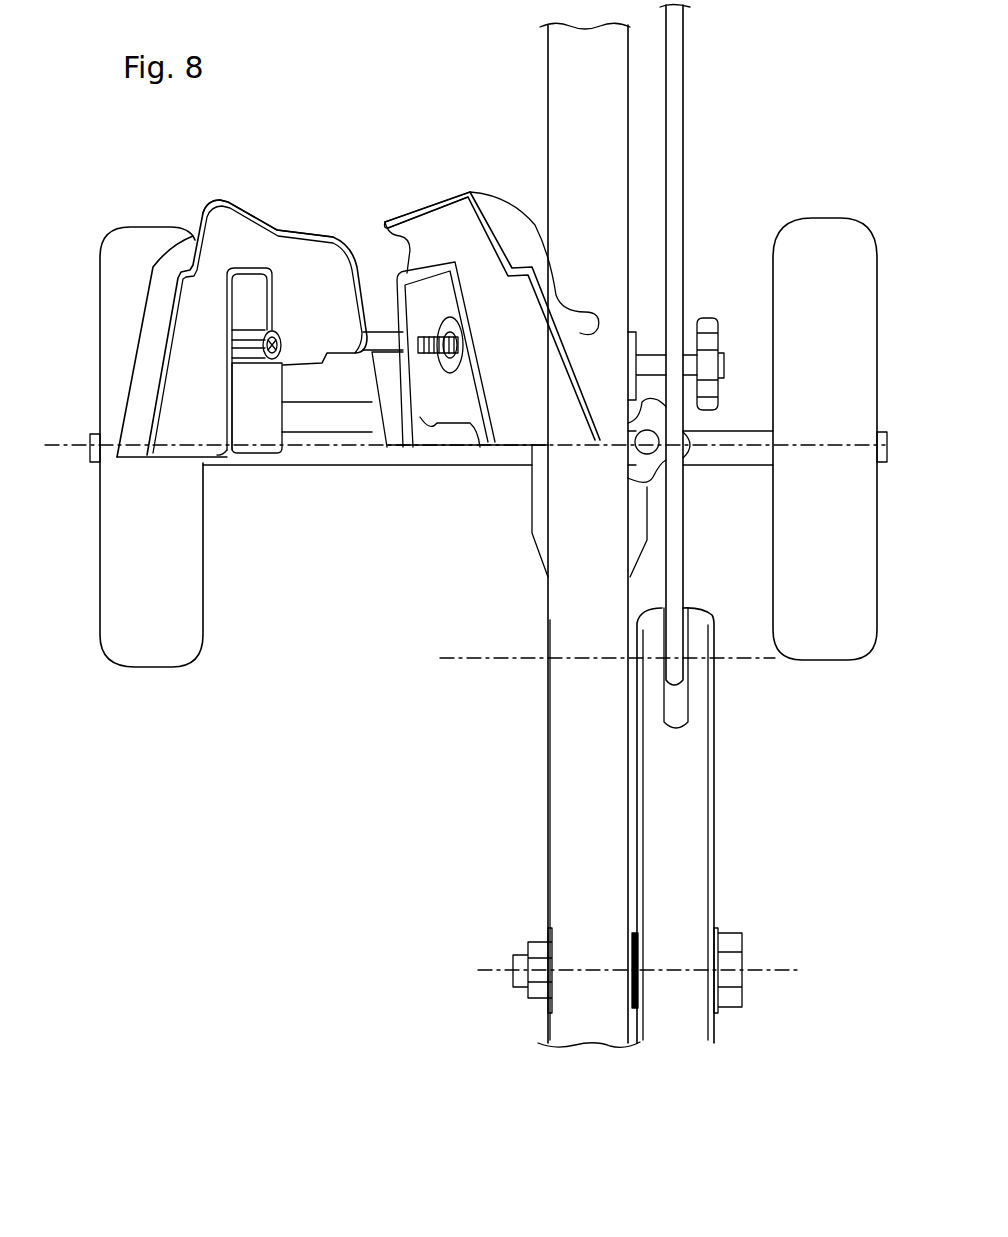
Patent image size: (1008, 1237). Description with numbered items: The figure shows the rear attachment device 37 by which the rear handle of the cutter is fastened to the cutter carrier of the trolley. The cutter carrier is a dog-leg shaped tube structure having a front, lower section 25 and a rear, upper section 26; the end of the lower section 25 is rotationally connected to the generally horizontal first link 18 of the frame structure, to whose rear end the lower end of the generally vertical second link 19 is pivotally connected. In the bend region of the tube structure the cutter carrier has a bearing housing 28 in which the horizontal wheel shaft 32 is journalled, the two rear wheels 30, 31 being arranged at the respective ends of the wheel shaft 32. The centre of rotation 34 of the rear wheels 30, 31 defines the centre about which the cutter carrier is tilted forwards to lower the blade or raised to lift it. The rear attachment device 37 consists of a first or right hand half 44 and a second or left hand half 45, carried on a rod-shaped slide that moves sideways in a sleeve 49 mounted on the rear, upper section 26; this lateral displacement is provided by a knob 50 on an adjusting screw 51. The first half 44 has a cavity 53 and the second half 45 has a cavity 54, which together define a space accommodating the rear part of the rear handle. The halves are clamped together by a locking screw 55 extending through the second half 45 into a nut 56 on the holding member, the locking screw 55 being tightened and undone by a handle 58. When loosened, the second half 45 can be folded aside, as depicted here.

The first link 18 is at (694, 833).
The second link 19 is at (676, 52).
The front, lower section 25 is at (573, 603).
The rear, upper section 26 is at (548, 52).
The bearing housing 28 is at (532, 535).
The rear wheel 30 is at (808, 637).
The rear wheel 31 is at (193, 617).
The wheel shaft 32 is at (331, 458).
The centre of rotation 34 is at (90, 440).
The rear attachment device 37 is at (313, 236).
The first half 44 is at (170, 268).
The second half 45 is at (515, 200).
The sleeve 49 is at (392, 338).
The knob 50 is at (705, 318).
The adjusting screw 51 is at (647, 363).
The cavity 53 is at (185, 400).
The cavity 54 is at (467, 193).
The locking screw 55 is at (420, 418).
The nut 56 is at (278, 330).
The handle 58 is at (586, 312).